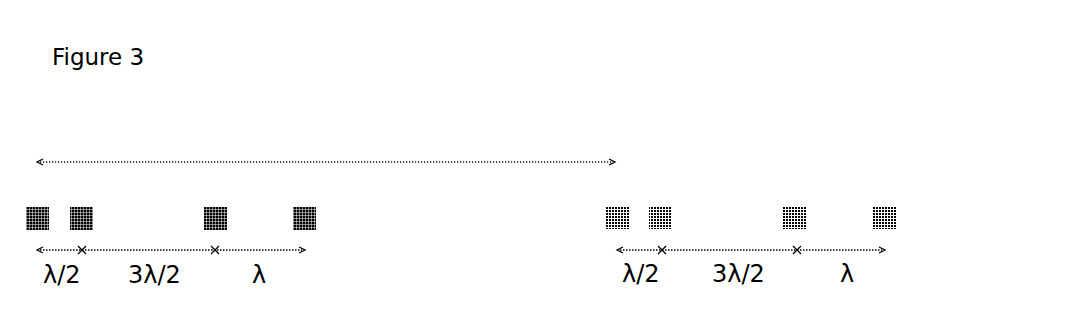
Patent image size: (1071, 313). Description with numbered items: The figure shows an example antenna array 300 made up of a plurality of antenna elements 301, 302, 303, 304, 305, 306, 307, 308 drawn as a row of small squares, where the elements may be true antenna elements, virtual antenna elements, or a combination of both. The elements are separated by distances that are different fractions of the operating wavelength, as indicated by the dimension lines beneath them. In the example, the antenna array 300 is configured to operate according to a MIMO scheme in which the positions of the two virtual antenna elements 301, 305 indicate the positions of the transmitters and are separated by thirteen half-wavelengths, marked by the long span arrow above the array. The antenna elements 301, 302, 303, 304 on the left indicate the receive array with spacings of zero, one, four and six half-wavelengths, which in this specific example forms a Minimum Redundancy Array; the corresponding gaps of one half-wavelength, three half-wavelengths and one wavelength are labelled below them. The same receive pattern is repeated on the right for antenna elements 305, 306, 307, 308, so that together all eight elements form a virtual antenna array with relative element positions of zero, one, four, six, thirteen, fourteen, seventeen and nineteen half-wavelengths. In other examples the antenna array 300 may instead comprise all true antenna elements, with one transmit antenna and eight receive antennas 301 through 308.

The antenna array 300 is at (283, 88).
The antenna element 301 is at (30, 202).
The antenna element 302 is at (88, 202).
The antenna element 303 is at (215, 202).
The antenna element 304 is at (300, 202).
The antenna element 305 is at (608, 201).
The antenna element 306 is at (670, 201).
The antenna element 307 is at (788, 200).
The antenna element 308 is at (879, 202).